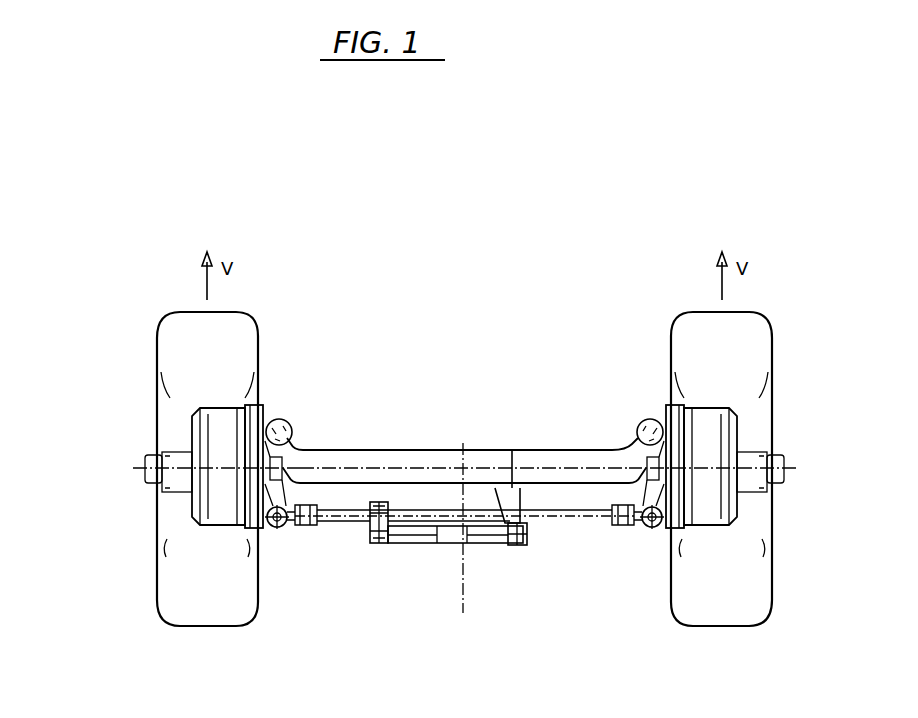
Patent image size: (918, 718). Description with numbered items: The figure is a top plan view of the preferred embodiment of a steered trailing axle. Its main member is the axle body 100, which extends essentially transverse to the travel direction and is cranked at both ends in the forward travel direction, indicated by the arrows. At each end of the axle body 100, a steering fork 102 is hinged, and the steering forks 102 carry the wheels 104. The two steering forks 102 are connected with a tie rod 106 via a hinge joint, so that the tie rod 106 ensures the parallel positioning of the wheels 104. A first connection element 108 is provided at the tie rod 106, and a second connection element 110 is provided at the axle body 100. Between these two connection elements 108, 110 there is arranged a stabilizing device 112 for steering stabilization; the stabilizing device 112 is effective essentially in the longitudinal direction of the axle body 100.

The axle body 100 is at (389, 457).
The steering forks 102 is at (288, 438).
The wheels 104 is at (158, 354).
The tie rod 106 is at (332, 524).
The first connection element 108 is at (393, 547).
The second connection element 110 is at (512, 450).
The stabilizing device 112 is at (477, 552).